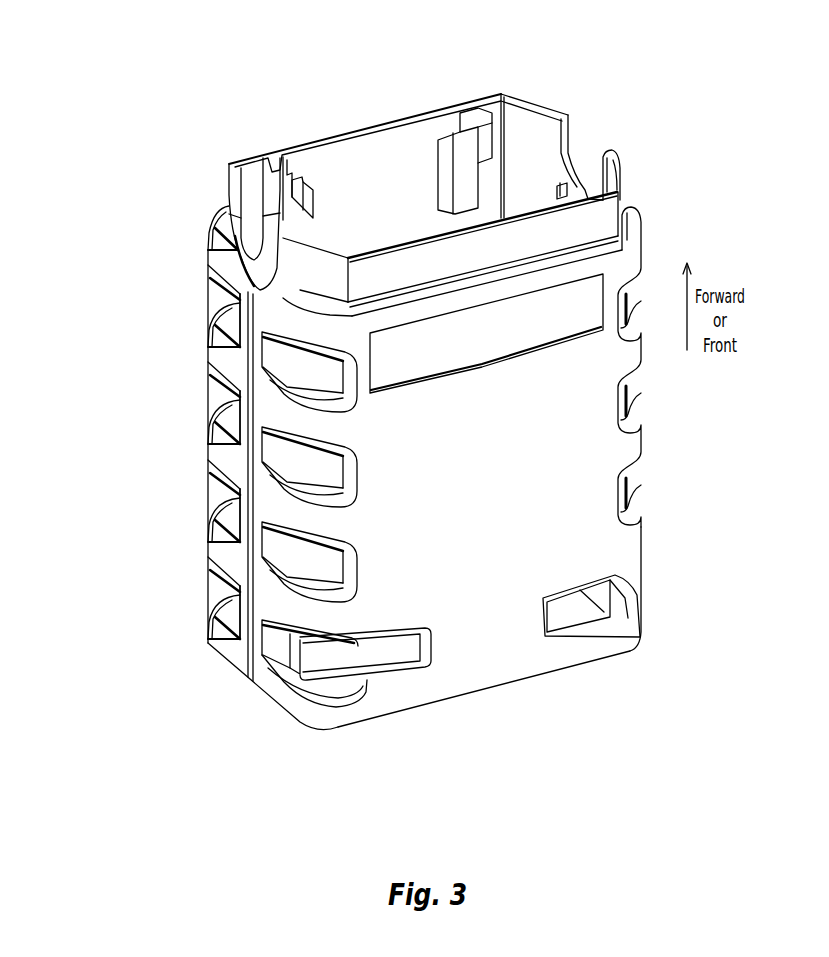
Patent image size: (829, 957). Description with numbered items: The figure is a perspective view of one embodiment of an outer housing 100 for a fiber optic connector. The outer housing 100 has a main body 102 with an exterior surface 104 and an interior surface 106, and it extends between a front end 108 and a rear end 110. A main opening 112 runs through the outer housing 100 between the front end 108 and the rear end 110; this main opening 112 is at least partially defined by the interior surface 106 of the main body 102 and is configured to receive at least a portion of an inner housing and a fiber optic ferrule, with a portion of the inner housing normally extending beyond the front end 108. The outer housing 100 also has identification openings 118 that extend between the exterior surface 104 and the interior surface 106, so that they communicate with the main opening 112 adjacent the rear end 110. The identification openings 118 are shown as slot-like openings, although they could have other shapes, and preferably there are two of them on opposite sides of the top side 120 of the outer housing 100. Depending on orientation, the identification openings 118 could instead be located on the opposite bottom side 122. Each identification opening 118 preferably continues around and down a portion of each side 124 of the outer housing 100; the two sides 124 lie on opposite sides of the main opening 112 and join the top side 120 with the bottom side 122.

The outer housing 100 is at (150, 433).
The main body 102 is at (658, 505).
The exterior surface 104 is at (647, 546).
The interior surface 106 is at (334, 157).
The front end 108 is at (529, 98).
The rear end 110 is at (495, 690).
The main opening 112 is at (437, 95).
The identification openings 118 is at (352, 665).
The top side 120 is at (423, 597).
The bottom side 122 is at (391, 120).
The sides 124 is at (222, 557).